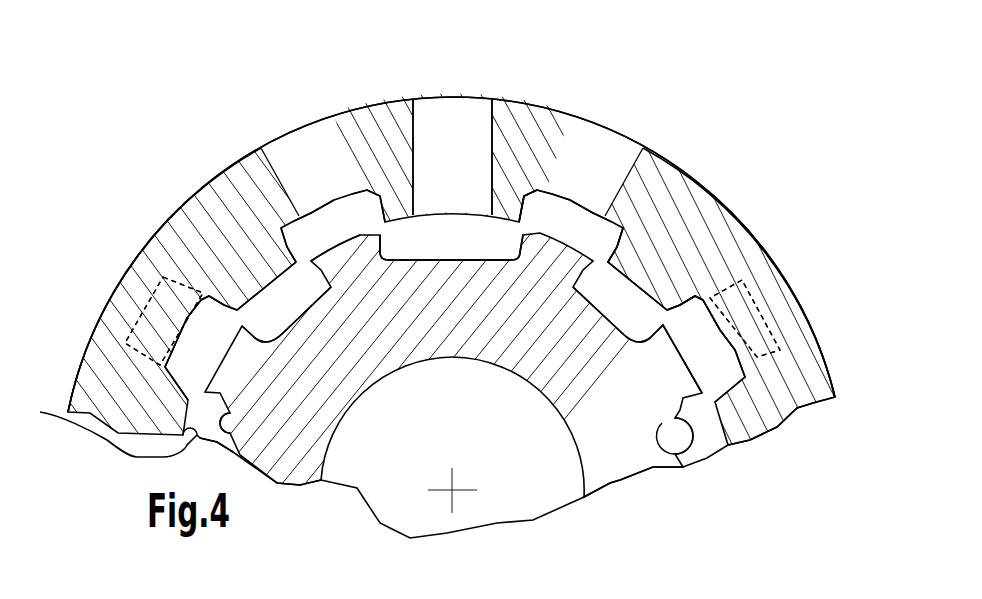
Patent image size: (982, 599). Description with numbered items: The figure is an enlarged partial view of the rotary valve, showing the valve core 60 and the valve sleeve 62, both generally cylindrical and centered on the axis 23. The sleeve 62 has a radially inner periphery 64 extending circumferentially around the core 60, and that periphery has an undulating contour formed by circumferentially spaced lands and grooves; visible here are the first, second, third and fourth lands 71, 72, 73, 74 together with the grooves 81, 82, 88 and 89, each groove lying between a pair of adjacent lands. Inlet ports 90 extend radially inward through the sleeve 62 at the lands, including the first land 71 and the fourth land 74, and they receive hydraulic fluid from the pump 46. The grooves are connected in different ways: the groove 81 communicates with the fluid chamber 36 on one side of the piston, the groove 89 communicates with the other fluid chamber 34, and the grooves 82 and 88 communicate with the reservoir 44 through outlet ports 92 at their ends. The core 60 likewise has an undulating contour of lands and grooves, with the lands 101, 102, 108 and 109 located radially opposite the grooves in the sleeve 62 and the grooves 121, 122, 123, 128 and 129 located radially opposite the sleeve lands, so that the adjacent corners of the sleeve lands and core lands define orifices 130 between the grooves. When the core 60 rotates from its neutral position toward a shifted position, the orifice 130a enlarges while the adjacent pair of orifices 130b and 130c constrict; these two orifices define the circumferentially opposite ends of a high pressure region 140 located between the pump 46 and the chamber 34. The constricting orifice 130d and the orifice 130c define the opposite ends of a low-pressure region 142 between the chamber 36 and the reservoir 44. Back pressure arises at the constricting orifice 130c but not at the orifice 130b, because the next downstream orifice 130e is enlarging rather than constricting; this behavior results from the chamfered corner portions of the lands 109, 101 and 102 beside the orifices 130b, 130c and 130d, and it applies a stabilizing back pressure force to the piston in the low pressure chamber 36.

The axis 23 is at (452, 488).
The fluid chamber 34 is at (291, 133).
The fluid chamber 36 is at (612, 130).
The reservoir 44 is at (157, 323).
The pump 46 is at (452, 97).
The valve core 60 is at (248, 288).
The valve sleeve 62 is at (200, 183).
The radially inner periphery 64 is at (106, 427).
The first land 71 is at (503, 210).
The second land 72 is at (652, 285).
The third land 73 is at (737, 430).
The fourth land 74 is at (296, 316).
The first groove 81 is at (603, 252).
The second groove 82 is at (717, 358).
The eighth groove 88 is at (185, 368).
The ninth groove 89 is at (327, 222).
The inlet port 90 is at (477, 117).
The outlet port 92 is at (140, 267).
The land 101 is at (548, 252).
The land 102 is at (680, 367).
The land 108 is at (230, 360).
The land 109 is at (343, 255).
The groove 121 is at (478, 264).
The groove 122 is at (620, 328).
The groove 123 is at (677, 413).
The groove 128 is at (232, 432).
The groove 129 is at (296, 352).
The orifice 130 is at (594, 232).
The enlarging orifice 130a is at (372, 220).
The constricting orifice 130b is at (303, 254).
The constricting orifice 130c is at (533, 218).
The constricting orifice 130d is at (672, 316).
The downstream orifice 130e is at (233, 320).
The high pressure region 140 is at (447, 249).
The low-pressure region 142 is at (630, 298).